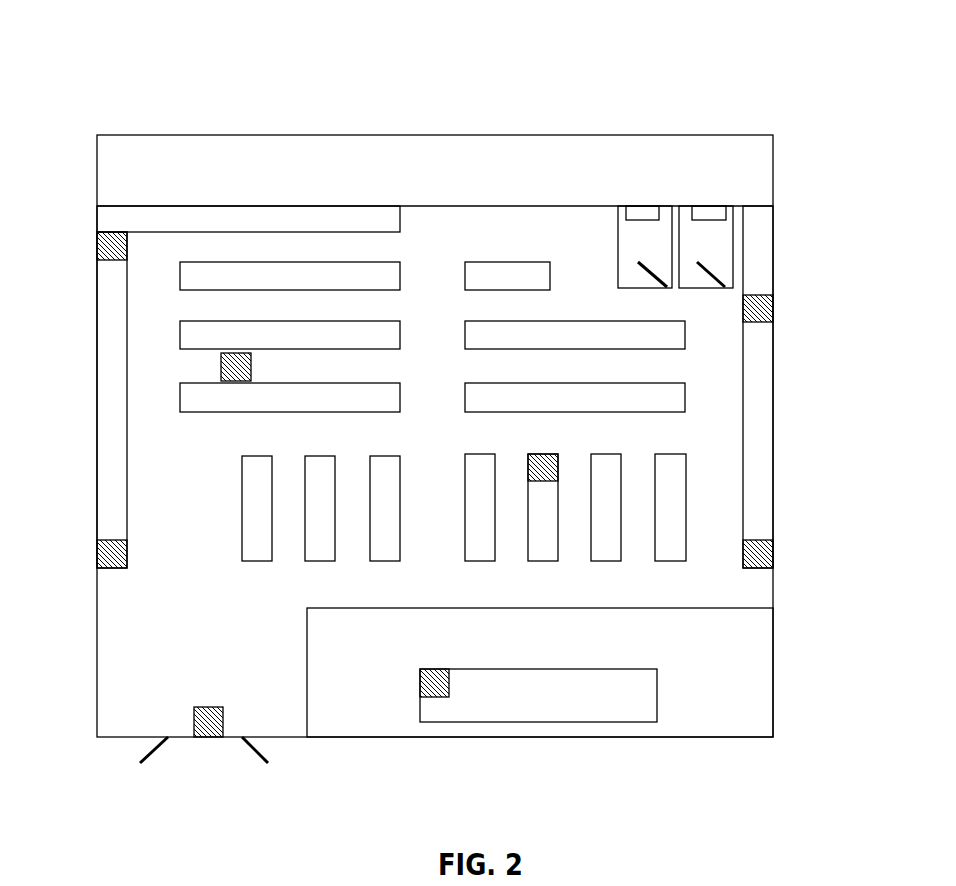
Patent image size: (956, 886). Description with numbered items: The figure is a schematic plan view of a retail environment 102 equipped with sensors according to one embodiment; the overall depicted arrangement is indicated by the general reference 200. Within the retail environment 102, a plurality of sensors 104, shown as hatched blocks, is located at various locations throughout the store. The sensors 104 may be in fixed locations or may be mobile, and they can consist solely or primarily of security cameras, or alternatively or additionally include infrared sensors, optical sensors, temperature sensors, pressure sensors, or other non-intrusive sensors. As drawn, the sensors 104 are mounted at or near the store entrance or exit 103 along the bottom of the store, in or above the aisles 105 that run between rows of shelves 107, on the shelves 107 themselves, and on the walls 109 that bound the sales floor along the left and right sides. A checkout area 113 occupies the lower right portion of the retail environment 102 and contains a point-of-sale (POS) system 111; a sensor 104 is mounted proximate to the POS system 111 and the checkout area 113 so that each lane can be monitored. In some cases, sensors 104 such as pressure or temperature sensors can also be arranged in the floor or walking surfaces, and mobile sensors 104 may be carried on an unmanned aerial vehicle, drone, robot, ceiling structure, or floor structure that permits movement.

The retail store environment 200 is at (85, 53).
The retail environment 102 is at (205, 135).
The store entrance or exit 103 is at (180, 738).
The sensors 104 is at (103, 248).
The aisles 105 is at (197, 307).
The shelves 107 is at (362, 272).
The walls 109 is at (761, 488).
The point-of-sale (POS) system 111 is at (538, 695).
The checkout area 113 is at (540, 672).